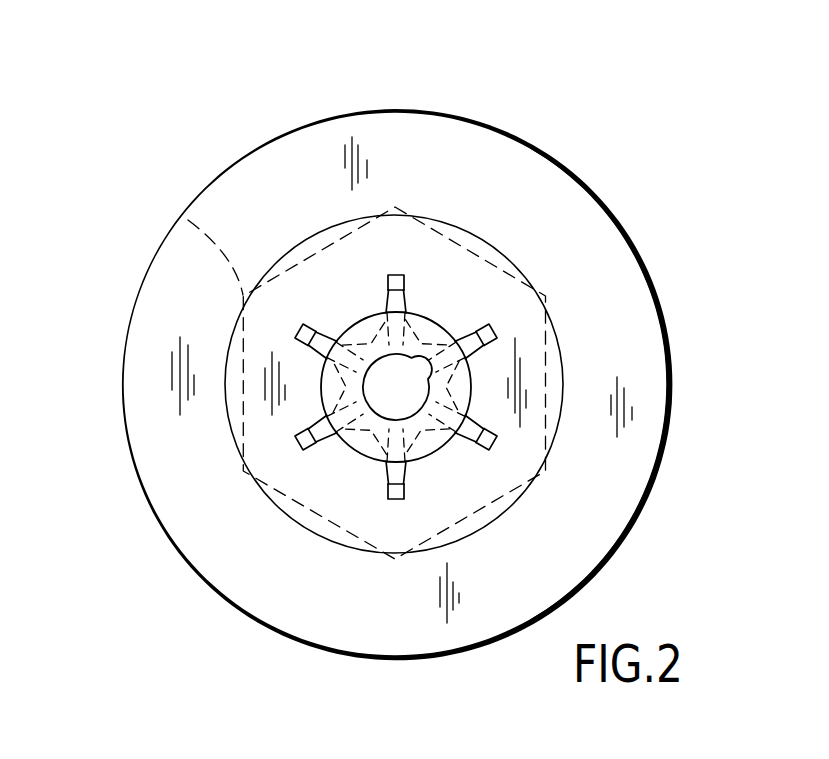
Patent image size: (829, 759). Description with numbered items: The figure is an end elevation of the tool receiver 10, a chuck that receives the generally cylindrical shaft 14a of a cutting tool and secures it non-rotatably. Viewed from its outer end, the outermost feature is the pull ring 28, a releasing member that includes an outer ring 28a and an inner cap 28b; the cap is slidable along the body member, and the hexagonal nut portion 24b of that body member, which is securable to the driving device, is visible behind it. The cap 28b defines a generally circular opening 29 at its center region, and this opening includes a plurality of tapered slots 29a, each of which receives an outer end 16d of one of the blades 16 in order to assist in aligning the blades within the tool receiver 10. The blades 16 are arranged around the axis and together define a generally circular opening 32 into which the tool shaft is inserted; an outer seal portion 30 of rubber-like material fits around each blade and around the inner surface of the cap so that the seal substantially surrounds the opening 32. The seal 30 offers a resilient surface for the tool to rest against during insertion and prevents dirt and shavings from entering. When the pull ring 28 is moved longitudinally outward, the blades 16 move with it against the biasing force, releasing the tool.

The tool receiver 10 is at (243, 105).
The shaft 14a is at (423, 420).
The blades 16 is at (470, 352).
The outer end of blade 16d is at (303, 345).
The hexagonal nut portion 24b is at (183, 217).
The pull ring 28 is at (474, 174).
The outer ring 28a is at (607, 246).
The inner cap 28b is at (468, 243).
The opening 29 is at (421, 320).
The tapered slots 29a is at (405, 297).
The outer seal portion 30 is at (452, 442).
The opening 32 is at (432, 372).